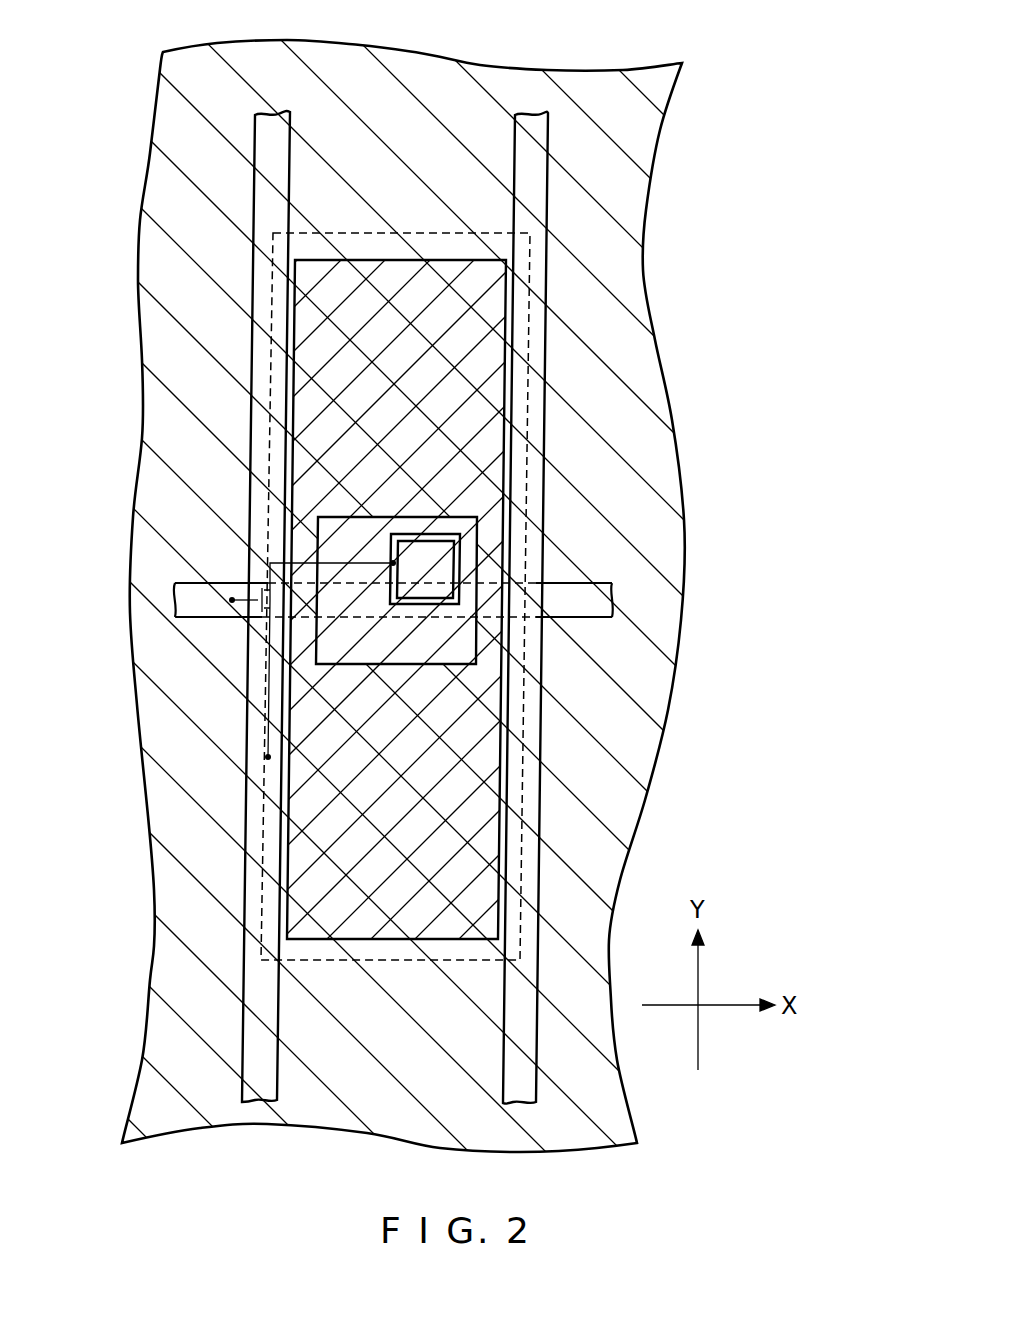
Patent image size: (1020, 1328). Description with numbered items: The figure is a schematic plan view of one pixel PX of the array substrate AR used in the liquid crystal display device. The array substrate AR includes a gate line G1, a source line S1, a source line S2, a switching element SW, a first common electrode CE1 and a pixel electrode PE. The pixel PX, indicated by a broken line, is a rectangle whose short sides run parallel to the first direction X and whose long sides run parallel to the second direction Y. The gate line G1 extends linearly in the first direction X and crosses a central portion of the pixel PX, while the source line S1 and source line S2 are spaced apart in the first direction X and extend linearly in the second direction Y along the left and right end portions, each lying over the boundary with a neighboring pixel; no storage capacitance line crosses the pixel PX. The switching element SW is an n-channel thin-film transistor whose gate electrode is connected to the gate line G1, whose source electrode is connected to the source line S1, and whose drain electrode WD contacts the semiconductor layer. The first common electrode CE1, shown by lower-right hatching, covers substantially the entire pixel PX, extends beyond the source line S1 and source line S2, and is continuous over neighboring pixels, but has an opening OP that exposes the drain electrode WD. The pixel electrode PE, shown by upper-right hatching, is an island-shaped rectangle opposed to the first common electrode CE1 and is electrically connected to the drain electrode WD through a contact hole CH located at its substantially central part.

The source line S1 is at (270, 113).
The source line S2 is at (530, 113).
The pixel PX is at (540, 230).
The array substrate AR is at (672, 221).
The pixel electrode PE is at (486, 372).
The first common electrode CE1 is at (683, 498).
The switching element SW is at (258, 566).
The gate line G1 is at (174, 605).
The drain electrode WD is at (457, 548).
The contact hole CH is at (452, 572).
The opening OP is at (510, 664).